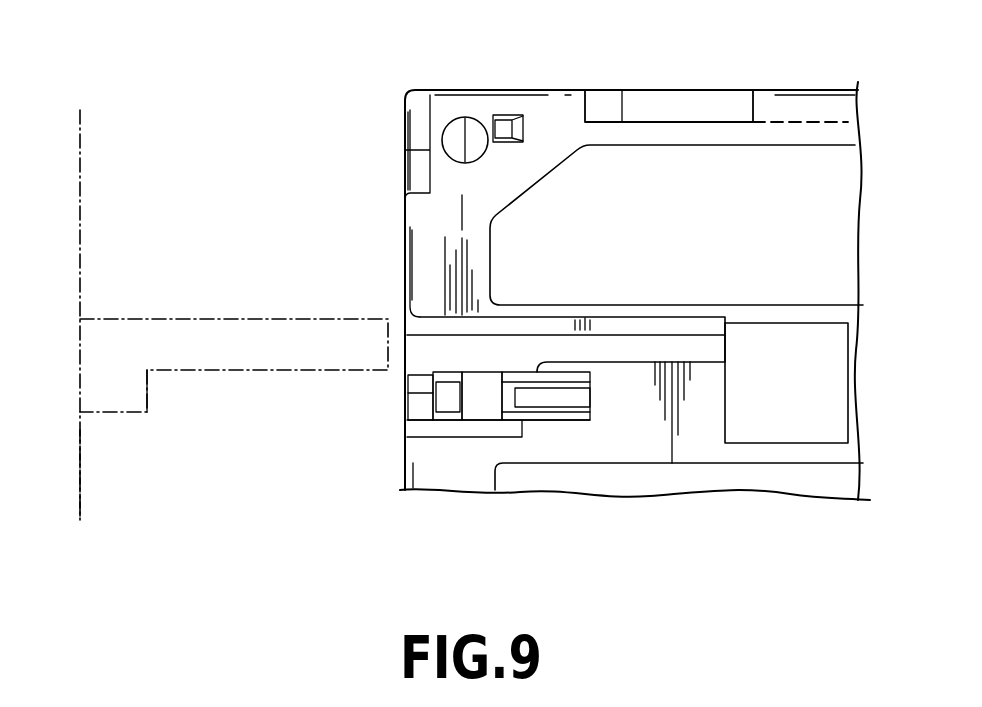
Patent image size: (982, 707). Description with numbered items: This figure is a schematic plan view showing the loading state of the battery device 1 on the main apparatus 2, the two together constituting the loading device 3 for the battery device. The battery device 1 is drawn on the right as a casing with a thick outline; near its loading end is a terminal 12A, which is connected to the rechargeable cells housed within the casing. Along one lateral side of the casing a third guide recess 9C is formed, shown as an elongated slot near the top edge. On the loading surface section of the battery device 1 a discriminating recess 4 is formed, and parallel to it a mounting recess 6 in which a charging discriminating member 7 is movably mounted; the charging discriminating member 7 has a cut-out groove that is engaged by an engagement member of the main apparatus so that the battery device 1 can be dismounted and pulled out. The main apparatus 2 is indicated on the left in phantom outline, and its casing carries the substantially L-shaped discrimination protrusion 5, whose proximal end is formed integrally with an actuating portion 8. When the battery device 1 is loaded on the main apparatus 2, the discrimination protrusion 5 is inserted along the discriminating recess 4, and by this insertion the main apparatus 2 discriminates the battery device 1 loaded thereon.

The battery device 1 is at (533, 72).
The main apparatus 2 is at (167, 155).
The loading device 3 is at (262, 518).
The discriminating recess 4 is at (410, 323).
The discrimination protrusion 5 is at (222, 330).
The mounting recess 6 is at (407, 387).
The charging discriminating member 7 is at (448, 402).
The actuating portion 8 is at (150, 388).
The third guide recess 9C is at (682, 110).
The terminal 12A is at (403, 147).